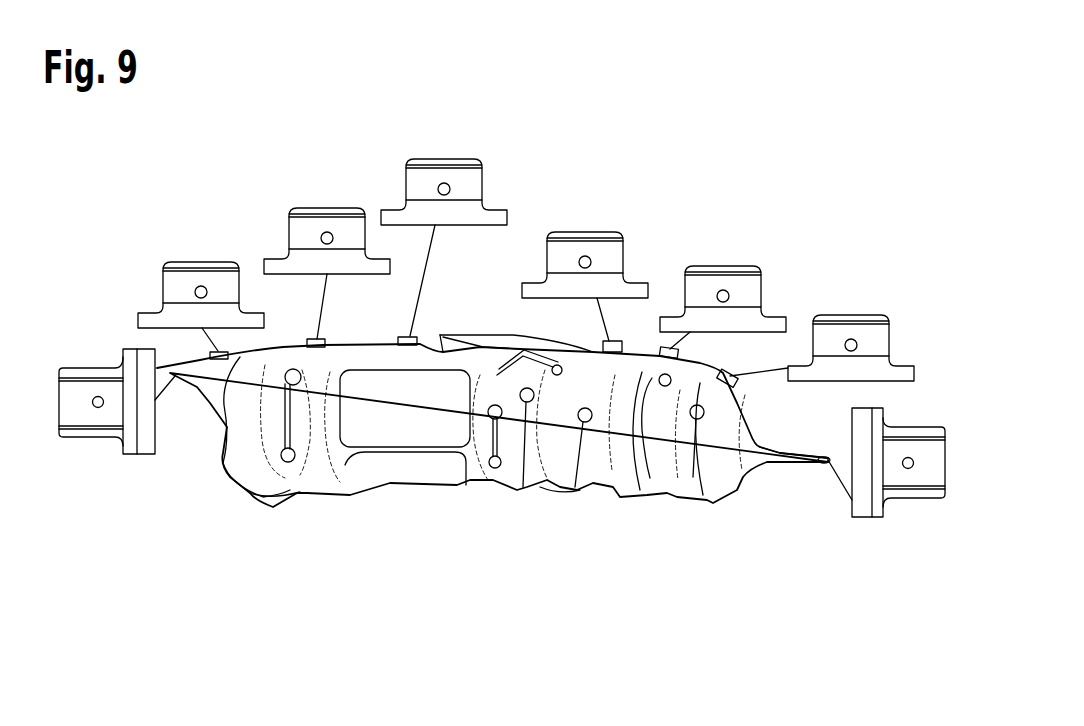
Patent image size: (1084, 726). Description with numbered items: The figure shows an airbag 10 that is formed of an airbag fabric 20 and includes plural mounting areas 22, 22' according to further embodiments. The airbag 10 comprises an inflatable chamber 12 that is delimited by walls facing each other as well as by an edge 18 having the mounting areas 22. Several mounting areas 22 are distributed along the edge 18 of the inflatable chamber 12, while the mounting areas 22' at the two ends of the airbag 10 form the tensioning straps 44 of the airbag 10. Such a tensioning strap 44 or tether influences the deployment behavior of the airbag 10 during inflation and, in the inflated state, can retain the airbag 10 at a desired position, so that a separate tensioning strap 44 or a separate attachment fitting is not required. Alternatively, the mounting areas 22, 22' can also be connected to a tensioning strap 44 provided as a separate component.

The airbag 10 is at (440, 508).
The inflatable chamber 12 is at (305, 478).
The edge 18 is at (380, 340).
The airbag fabric 20 is at (398, 464).
The mounting area 22 is at (526, 227).
The mounting area 22' is at (509, 395).
The tensioning strap 44 is at (790, 452).